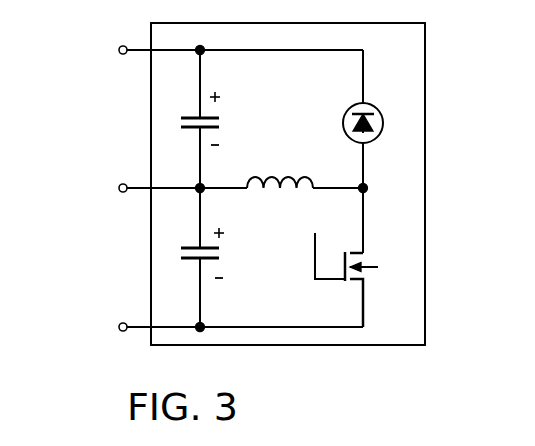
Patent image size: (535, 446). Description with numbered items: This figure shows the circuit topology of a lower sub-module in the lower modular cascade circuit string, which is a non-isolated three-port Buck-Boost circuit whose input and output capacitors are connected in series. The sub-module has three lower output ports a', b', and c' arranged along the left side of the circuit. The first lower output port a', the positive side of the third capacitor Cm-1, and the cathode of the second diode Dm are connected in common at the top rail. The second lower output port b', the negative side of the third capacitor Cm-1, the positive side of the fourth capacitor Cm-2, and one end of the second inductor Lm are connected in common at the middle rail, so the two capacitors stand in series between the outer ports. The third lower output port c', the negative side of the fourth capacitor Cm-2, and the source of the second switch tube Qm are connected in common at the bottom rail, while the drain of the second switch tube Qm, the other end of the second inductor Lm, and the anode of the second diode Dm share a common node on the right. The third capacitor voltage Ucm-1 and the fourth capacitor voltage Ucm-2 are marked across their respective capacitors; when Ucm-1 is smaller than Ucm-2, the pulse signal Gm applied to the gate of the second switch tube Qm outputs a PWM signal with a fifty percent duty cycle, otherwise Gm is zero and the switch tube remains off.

The first lower output port a' is at (217, 49).
The second lower output port b' is at (159, 186).
The third lower output port c' is at (217, 325).
The third capacitor Cm-1 is at (146, 119).
The fourth capacitor Cm-2 is at (146, 257).
The third capacitor voltage Ucm-1 is at (258, 118).
The fourth capacitor voltage Ucm-2 is at (257, 253).
The second inductor Lm is at (307, 169).
The second diode Dm is at (344, 119).
The second switch tube Qm is at (381, 257).
The pulse signal of the second switch tube Gm is at (333, 241).